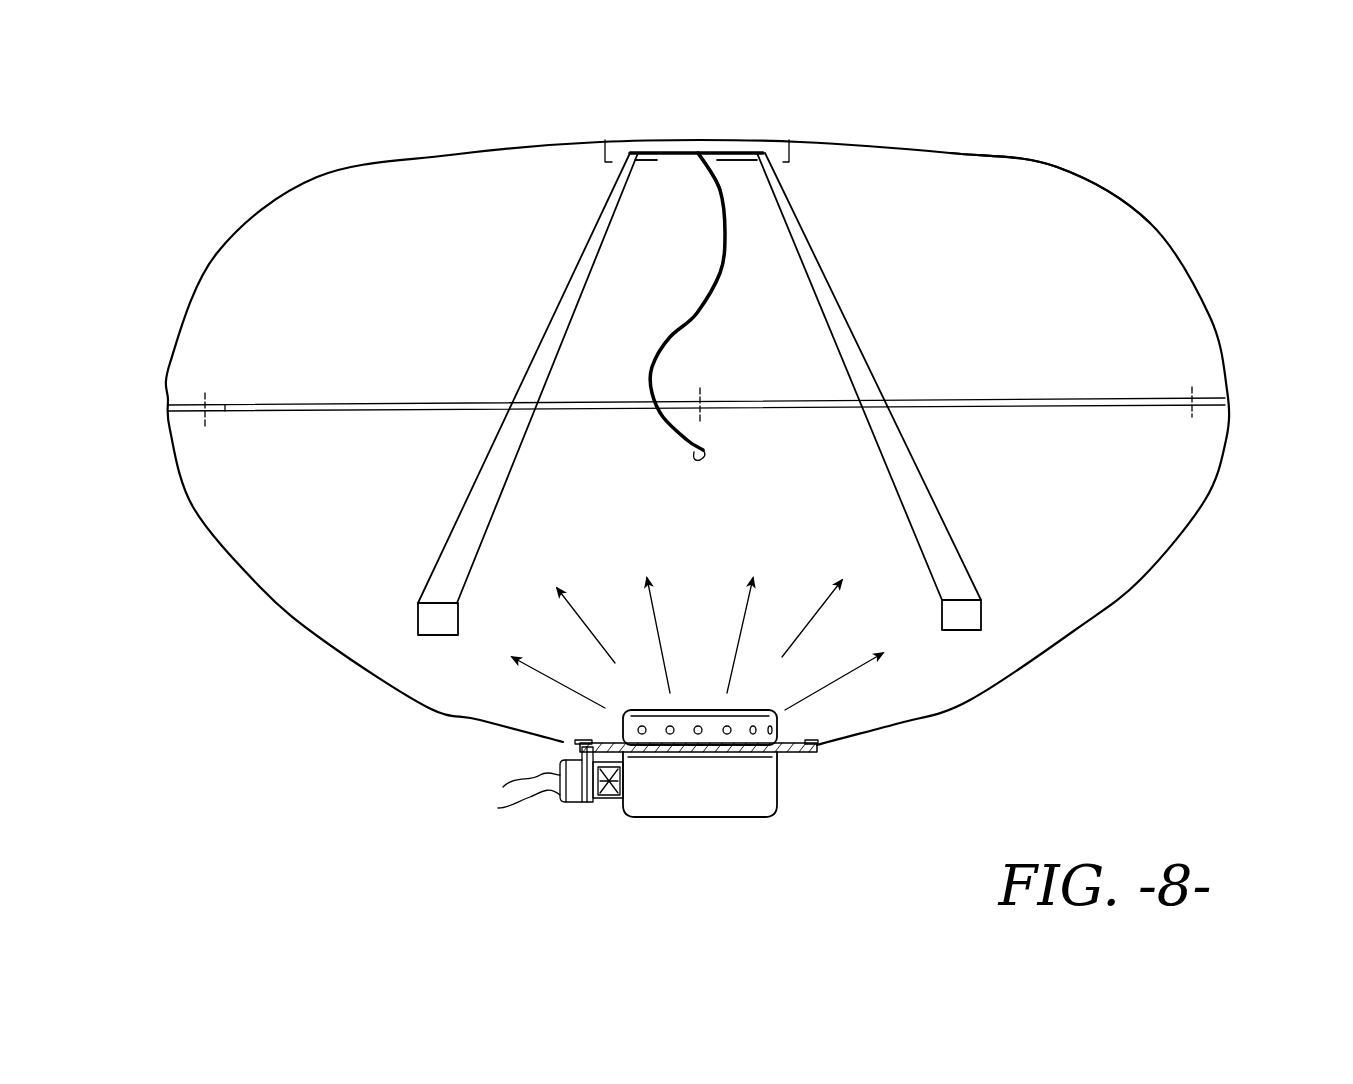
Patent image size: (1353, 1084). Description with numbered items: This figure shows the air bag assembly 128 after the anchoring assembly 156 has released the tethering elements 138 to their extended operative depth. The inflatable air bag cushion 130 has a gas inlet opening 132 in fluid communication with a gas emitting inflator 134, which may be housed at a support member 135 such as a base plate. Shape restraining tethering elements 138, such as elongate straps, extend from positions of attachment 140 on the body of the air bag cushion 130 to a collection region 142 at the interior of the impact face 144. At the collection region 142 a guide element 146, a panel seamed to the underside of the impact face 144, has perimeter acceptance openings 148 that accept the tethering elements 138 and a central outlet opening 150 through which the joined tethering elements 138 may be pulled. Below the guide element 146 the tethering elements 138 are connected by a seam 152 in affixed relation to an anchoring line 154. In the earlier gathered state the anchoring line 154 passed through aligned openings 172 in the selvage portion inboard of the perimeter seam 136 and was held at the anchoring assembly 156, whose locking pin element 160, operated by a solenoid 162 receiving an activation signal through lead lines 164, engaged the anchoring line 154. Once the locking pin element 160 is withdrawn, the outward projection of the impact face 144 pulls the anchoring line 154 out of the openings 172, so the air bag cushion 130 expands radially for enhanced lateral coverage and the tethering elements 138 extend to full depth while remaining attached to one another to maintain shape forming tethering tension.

The air bag assembly 128 is at (1224, 192).
The air bag cushion 130 is at (1203, 276).
The gas inlet opening 132 is at (808, 740).
The gas emitting inflator 134 is at (752, 795).
The support member 135 is at (788, 753).
The perimeter seam 136 is at (262, 404).
The tethering elements 138 is at (467, 500).
The positions of attachment 140 is at (437, 620).
The collection region 142 is at (602, 123).
The impact face 144 is at (1057, 165).
The guide element 146 is at (652, 163).
The perimeter acceptance openings 148 is at (773, 163).
The central outlet opening 150 is at (697, 153).
The seam 152 is at (690, 160).
The anchoring line 154 is at (720, 277).
The anchoring assembly 156 is at (601, 810).
The locking pin element 160 is at (617, 803).
The solenoid 162 is at (567, 807).
The lead lines 164 is at (508, 813).
The openings 172 is at (215, 413).